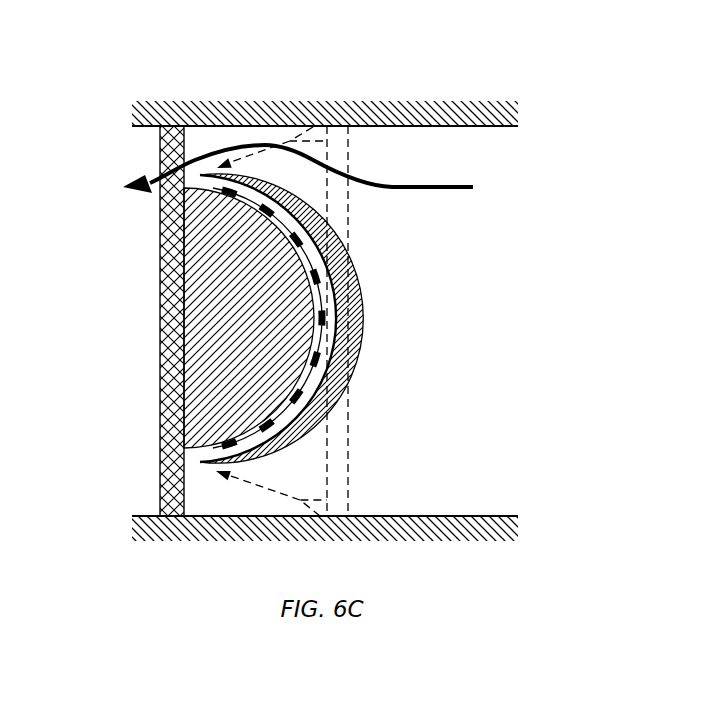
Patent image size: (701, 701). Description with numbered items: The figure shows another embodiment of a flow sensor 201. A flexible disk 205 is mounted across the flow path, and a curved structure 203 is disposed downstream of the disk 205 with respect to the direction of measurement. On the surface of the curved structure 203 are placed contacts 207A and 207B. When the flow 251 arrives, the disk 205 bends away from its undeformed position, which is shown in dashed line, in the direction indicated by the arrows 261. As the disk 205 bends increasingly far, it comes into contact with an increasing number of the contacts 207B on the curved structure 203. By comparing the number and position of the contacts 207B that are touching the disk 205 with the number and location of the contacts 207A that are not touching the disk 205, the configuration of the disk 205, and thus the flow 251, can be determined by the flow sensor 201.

The flow sensor 201 is at (254, 44).
The curved structure 203 is at (232, 323).
The flexible disk 205 is at (337, 315).
The contacts 207A is at (236, 440).
The contacts 207B is at (322, 352).
The flow 251 is at (473, 188).
The arrows 261 is at (318, 124).